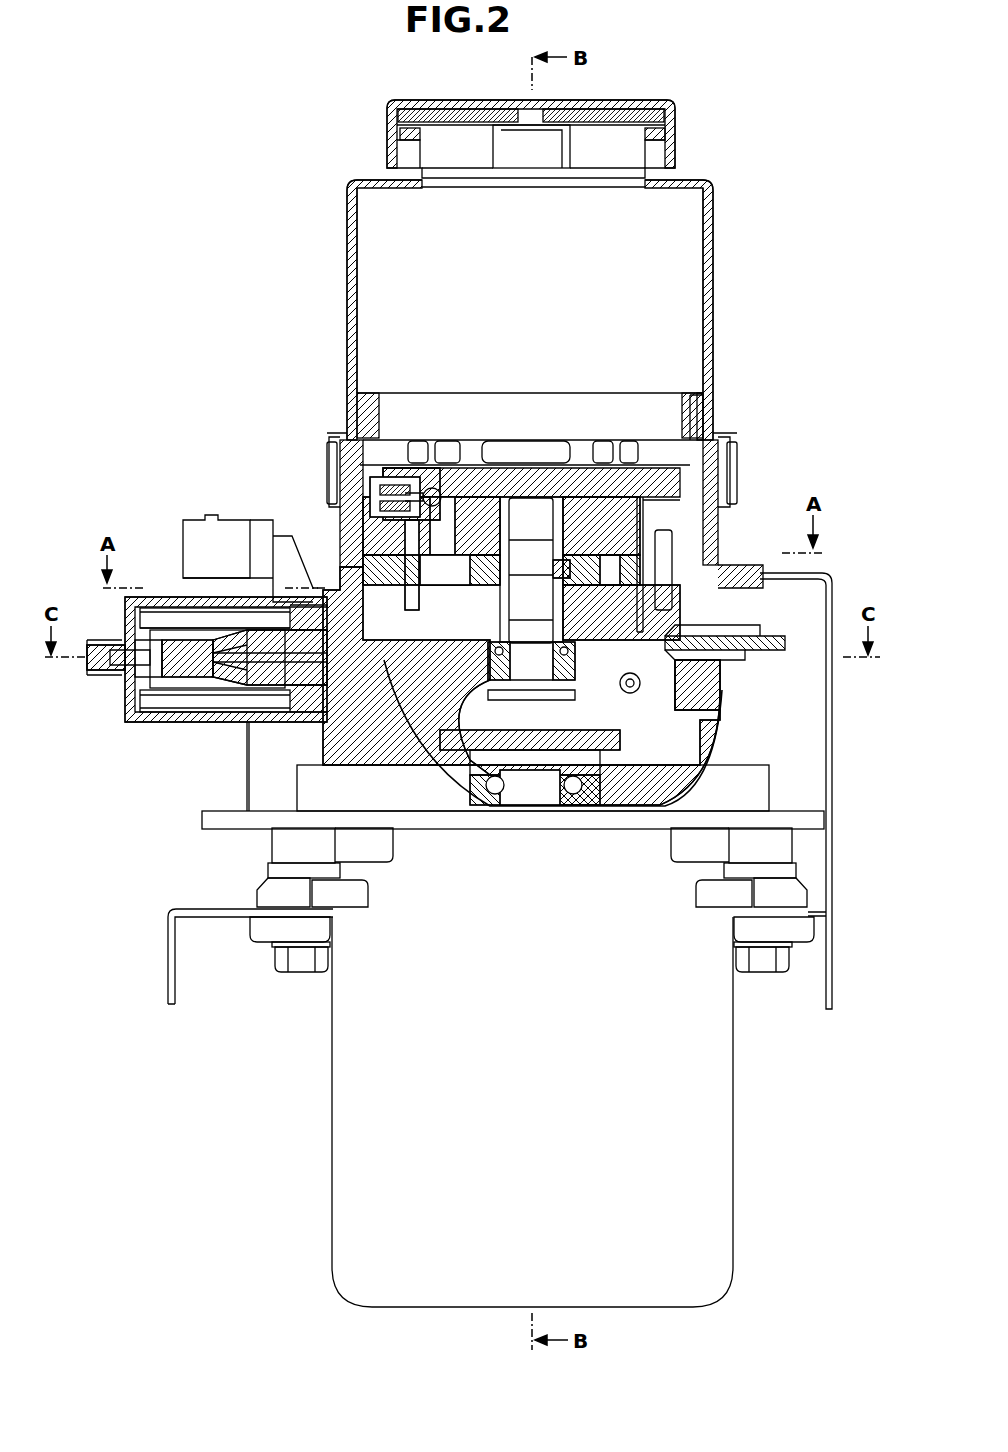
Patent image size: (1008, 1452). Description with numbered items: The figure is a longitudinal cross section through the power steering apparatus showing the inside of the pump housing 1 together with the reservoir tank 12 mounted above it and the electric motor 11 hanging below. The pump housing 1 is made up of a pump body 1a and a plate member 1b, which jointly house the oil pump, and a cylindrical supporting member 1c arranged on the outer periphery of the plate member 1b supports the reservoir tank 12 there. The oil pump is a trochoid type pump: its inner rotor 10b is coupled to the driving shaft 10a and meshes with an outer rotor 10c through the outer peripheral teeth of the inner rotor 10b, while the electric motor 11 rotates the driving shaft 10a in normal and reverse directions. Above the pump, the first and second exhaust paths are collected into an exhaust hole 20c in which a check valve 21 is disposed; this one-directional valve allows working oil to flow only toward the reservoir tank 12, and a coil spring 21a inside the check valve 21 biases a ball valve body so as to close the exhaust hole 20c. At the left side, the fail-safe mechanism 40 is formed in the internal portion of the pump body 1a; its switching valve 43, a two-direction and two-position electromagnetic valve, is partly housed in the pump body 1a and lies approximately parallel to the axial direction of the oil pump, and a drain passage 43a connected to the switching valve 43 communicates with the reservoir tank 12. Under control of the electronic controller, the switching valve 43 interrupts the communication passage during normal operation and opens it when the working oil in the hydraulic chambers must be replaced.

The pump housing 1 is at (718, 538).
The pump body 1a is at (668, 680).
The plate member 1b is at (712, 430).
The cylindrical supporting member 1c is at (737, 477).
The driving shaft 10a is at (547, 507).
The inner rotor 10b is at (485, 560).
The outer rotor 10c is at (463, 547).
The electric motor 11 is at (718, 1063).
The reservoir tank 12 is at (713, 245).
The exhaust hole 20c is at (605, 497).
The check valve 21 is at (433, 480).
The coil spring 21a is at (355, 478).
The fail-safe mechanism 40 is at (162, 732).
The switching valve 43 is at (270, 696).
The drain passage 43a is at (347, 557).